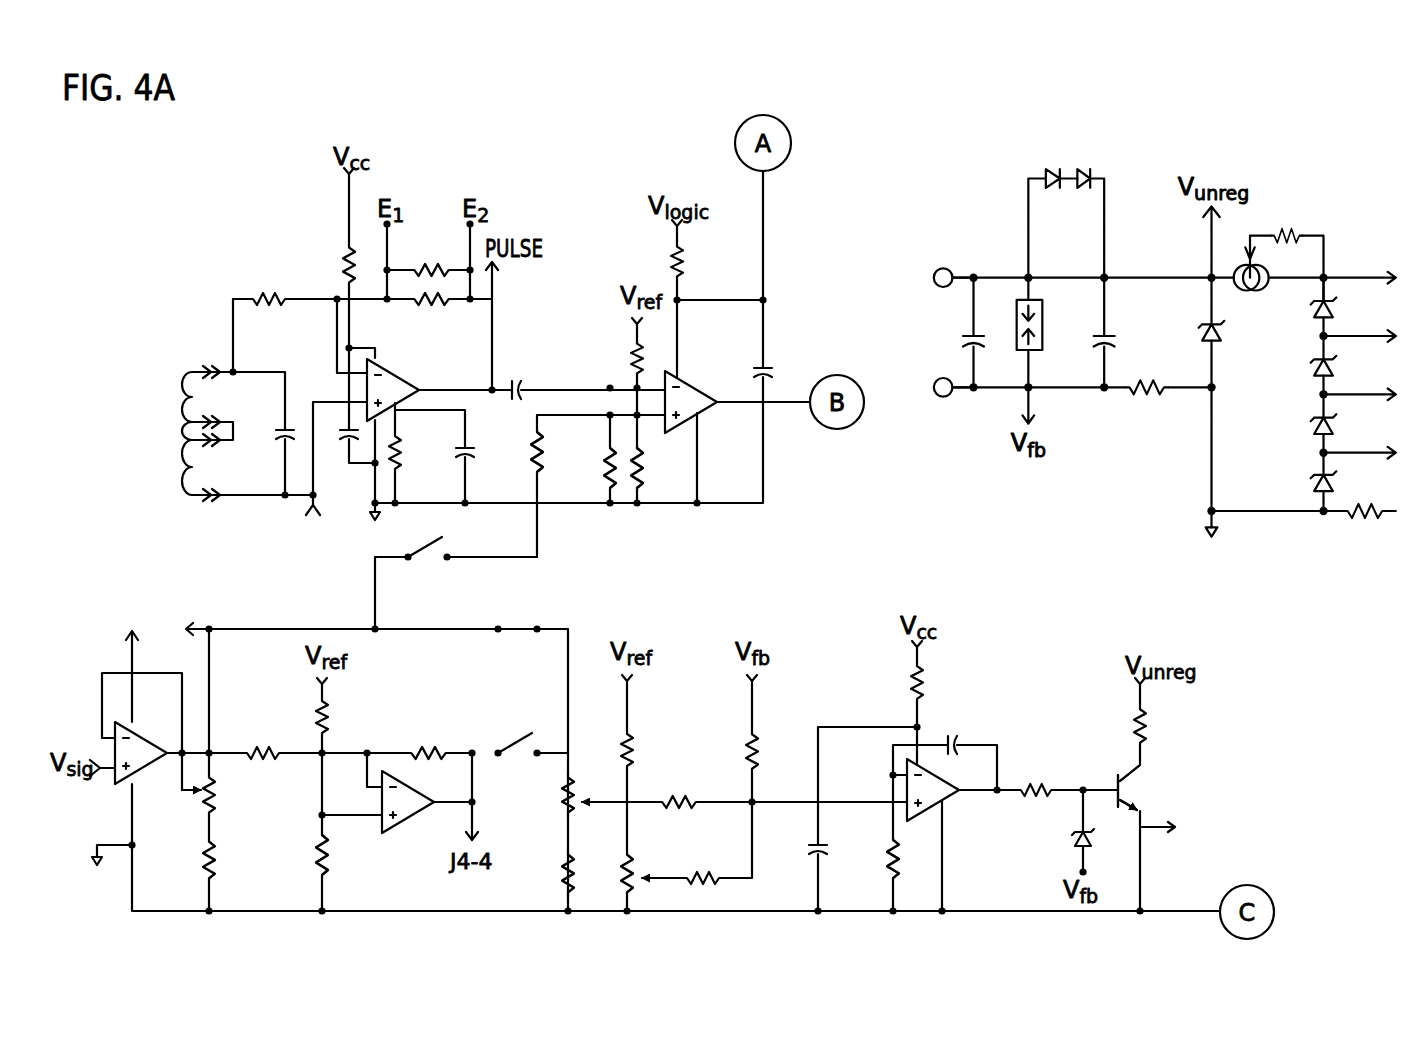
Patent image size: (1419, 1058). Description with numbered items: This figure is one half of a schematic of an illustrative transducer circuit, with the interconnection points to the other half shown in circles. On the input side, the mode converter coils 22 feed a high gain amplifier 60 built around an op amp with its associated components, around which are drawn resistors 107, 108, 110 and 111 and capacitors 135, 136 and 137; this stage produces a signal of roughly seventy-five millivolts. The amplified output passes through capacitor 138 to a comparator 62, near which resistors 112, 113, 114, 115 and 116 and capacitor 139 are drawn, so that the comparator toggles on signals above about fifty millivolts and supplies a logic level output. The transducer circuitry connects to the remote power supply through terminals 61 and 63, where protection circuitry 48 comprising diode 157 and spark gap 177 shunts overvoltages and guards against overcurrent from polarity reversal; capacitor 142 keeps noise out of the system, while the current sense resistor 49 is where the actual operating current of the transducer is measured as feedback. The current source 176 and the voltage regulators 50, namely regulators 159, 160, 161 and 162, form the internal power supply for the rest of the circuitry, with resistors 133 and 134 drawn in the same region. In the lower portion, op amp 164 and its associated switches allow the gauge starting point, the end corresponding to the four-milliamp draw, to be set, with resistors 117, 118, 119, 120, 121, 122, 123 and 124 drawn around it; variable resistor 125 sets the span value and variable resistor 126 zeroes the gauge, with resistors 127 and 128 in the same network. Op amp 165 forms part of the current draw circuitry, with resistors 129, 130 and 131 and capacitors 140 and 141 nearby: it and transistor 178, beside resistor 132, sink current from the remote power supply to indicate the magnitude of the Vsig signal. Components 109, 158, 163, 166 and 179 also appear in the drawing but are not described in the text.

The mode converter coils 22 is at (166, 366).
The protection circuitry 48 is at (964, 414).
The current sense resistor 49 is at (1147, 408).
The voltage regulators 50 is at (1350, 247).
The high gain amplifier 60 is at (418, 370).
The terminal 61 is at (940, 240).
The comparator 62 is at (703, 375).
The terminal 63 is at (954, 408).
The resistor 107 is at (268, 290).
The resistor 108 is at (340, 260).
The resistor 109 is at (437, 253).
The resistor 110 is at (430, 303).
The resistor 111 is at (400, 455).
The resistor 112 is at (532, 455).
The resistor 113 is at (608, 463).
The resistor 114 is at (662, 463).
The resistor 115 is at (635, 348).
The resistor 116 is at (683, 270).
The resistor 117 is at (216, 793).
The resistor 118 is at (216, 860).
The resistor 119 is at (257, 748).
The resistor 120 is at (330, 727).
The resistor 121 is at (332, 860).
The resistor 122 is at (428, 748).
The resistor 123 is at (563, 807).
The resistor 124 is at (563, 873).
The variable resistor 125 is at (640, 760).
The variable resistor 126 is at (633, 867).
The resistor 127 is at (675, 797).
The resistor 128 is at (715, 870).
The resistor 129 is at (910, 680).
The resistor 130 is at (885, 860).
The resistor 131 is at (1033, 783).
The resistor 132 is at (1148, 730).
The resistor 133 is at (1369, 534).
The resistor 134 is at (1291, 216).
The capacitor 135 is at (280, 430).
The capacitor 136 is at (342, 443).
The capacitor 137 is at (466, 452).
The capacitor 138 is at (512, 368).
The capacitor 139 is at (773, 367).
The capacitor 140 is at (812, 860).
The capacitor 141 is at (962, 740).
The capacitor 142 is at (955, 297).
The diode 157 is at (1050, 132).
The zener diode 158 is at (1236, 351).
The voltage regulator 159 is at (1351, 312).
The voltage regulator 160 is at (1351, 370).
The voltage regulator 161 is at (1351, 428).
The voltage regulator 162 is at (1351, 484).
The operational amplifier 163 is at (147, 740).
The op amp 164 is at (410, 818).
The op amp 165 is at (948, 797).
The zener diode 166 is at (1072, 843).
The current source 176 is at (1263, 300).
The spark gap 177 is at (1023, 283).
The transistor 178 is at (425, 557).
The capacitor 179 is at (1082, 300).